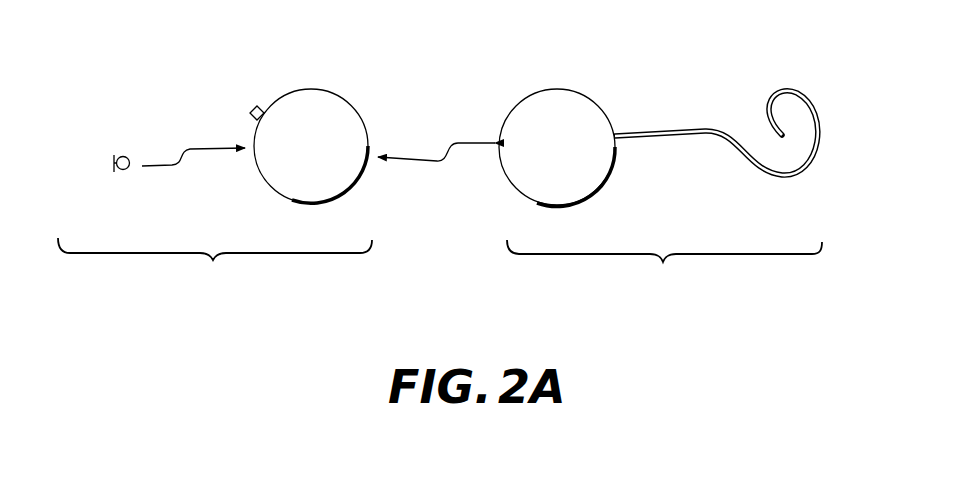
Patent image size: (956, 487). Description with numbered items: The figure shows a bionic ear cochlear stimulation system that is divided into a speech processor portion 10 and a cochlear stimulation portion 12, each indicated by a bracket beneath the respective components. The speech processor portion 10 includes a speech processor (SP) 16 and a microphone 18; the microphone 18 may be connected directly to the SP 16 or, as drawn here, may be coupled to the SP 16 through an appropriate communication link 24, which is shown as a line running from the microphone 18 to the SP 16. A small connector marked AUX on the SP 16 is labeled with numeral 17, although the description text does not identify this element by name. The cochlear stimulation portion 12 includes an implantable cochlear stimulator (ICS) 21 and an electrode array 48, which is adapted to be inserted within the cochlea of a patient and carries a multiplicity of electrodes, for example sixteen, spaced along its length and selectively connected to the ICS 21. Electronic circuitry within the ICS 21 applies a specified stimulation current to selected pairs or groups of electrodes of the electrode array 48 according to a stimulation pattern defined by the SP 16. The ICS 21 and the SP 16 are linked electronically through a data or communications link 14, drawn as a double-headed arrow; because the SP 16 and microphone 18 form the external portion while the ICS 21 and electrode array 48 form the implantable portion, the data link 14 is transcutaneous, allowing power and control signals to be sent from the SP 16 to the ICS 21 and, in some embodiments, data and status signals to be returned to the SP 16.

The speech processor portion 10 is at (213, 260).
The cochlear stimulation portion 12 is at (663, 262).
The data or communications link 14 is at (460, 142).
The speech processor (SP) 16 is at (310, 90).
The auxiliary input 17 is at (251, 108).
The microphone 18 is at (122, 155).
The implantable cochlear stimulator (ICS) 21 is at (557, 92).
The communication link 24 is at (192, 148).
The electrode array 48 is at (782, 90).